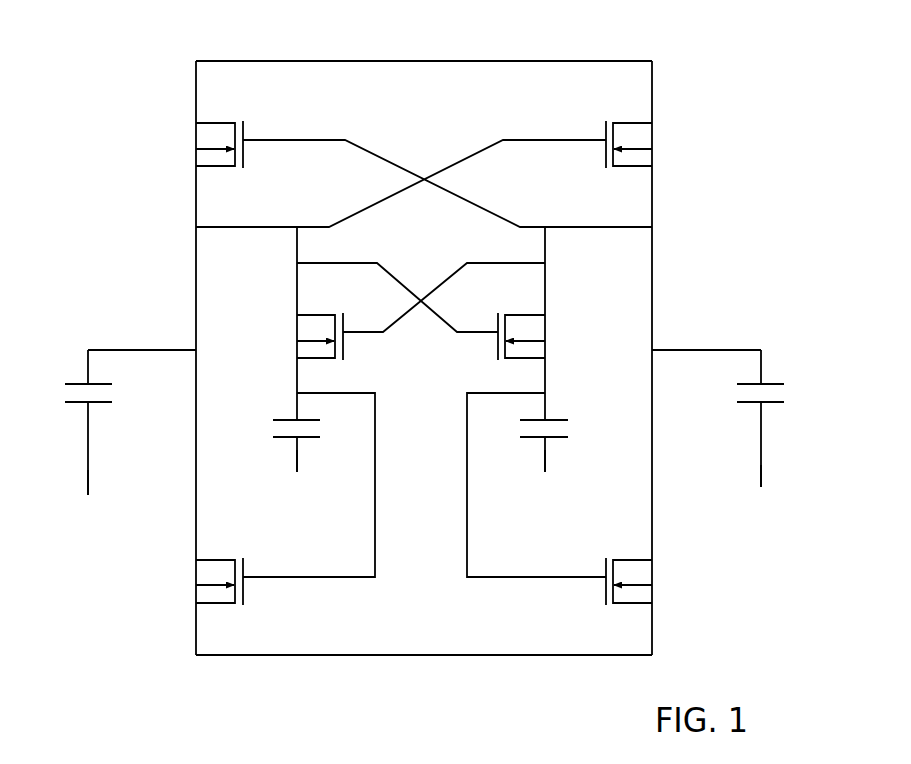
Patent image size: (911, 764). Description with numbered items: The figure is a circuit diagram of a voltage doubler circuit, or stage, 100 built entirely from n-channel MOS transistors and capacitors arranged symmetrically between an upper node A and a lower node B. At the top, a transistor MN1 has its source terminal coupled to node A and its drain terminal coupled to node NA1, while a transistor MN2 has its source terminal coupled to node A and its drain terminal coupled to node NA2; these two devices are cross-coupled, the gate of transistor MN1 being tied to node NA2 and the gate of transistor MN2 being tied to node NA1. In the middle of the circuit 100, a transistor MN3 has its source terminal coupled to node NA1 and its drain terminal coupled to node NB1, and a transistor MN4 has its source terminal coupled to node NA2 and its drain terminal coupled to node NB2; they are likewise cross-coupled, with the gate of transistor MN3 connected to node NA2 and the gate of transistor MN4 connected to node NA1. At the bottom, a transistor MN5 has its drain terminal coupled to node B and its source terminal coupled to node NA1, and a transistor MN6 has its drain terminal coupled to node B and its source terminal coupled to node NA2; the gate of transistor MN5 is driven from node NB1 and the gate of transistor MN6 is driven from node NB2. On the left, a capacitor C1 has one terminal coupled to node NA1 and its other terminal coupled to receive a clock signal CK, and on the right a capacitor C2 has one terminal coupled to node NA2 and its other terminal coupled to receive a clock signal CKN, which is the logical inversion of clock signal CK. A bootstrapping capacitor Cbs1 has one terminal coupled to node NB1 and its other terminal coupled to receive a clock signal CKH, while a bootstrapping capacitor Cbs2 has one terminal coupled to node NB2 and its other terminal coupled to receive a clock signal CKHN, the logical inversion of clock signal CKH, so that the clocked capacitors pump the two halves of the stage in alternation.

The voltage doubler circuit 100 is at (789, 103).
The n-channel MOS transistor MN1 is at (219, 131).
The n-channel MOS transistor MN2 is at (628, 131).
The n-channel MOS transistor MN3 is at (320, 324).
The n-channel MOS transistor MN4 is at (521, 324).
The n-channel MOS transistor MN5 is at (219, 568).
The n-channel MOS transistor MN6 is at (628, 568).
The capacitor C1 is at (73, 430).
The capacitor C2 is at (776, 434).
The bootstrapping capacitor Cbs1 is at (269, 459).
The bootstrapping capacitor Cbs2 is at (569, 459).
The node NA1 is at (142, 337).
The node NA2 is at (706, 337).
The node NB1 is at (309, 564).
The node NB2 is at (536, 564).
The node A is at (424, 34).
The node B is at (424, 629).
The clock signal CK is at (78, 490).
The clock signal CKN is at (765, 492).
The clock signal CKH is at (294, 475).
The clock signal CKHN is at (540, 475).